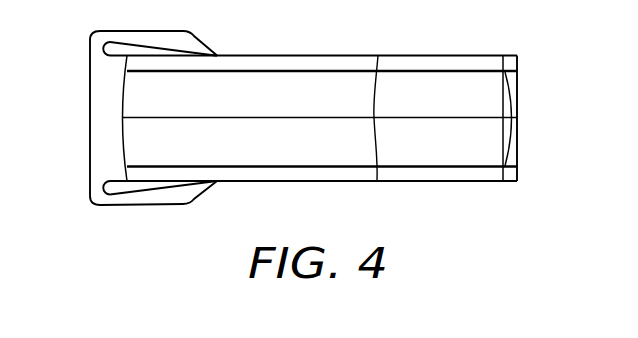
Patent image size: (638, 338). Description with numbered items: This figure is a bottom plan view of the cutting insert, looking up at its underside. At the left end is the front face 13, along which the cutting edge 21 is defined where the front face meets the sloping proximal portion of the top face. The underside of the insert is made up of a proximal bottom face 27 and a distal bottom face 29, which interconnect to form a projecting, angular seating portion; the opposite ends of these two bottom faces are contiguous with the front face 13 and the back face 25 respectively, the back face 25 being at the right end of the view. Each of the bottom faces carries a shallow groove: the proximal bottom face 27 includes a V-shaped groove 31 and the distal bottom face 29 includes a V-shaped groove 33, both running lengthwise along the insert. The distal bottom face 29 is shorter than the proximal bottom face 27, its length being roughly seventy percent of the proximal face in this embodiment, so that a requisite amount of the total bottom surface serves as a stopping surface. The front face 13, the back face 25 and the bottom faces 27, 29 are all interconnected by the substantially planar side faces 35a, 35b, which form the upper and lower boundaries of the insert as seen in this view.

The front face 13 is at (108, 120).
The cutting edge 21 is at (88, 137).
The back face 25 is at (512, 115).
The proximal bottom face 27 is at (255, 84).
The distal bottom face 29 is at (466, 82).
The V-shaped groove 31 is at (310, 117).
The V-shaped groove 33 is at (477, 117).
The side face 35a is at (378, 55).
The side face 35b is at (342, 182).